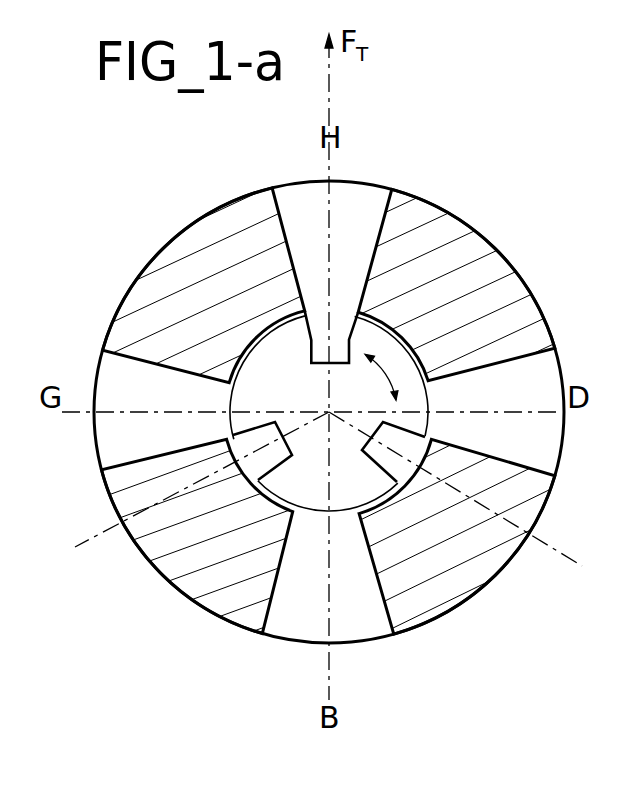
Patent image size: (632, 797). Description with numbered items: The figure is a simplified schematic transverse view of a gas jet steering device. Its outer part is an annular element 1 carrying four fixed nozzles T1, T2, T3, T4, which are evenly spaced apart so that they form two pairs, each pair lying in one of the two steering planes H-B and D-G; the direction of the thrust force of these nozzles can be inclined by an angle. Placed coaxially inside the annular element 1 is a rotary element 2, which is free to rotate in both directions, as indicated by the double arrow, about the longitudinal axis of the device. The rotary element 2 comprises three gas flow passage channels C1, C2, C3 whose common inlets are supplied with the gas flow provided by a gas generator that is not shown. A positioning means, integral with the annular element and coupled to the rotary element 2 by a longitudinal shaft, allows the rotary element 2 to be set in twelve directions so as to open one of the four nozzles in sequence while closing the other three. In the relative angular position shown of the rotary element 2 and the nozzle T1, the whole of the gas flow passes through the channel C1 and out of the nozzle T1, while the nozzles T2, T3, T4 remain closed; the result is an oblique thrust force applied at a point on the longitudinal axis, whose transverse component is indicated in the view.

The annular element 1 is at (321, 395).
The rotary element 2 is at (245, 393).
The nozzle T1 is at (364, 204).
The nozzle T2 is at (468, 494).
The nozzle T3 is at (303, 620).
The nozzle T4 is at (120, 368).
The gas flow passage channel C1 is at (313, 355).
The gas flow passage channel C2 is at (408, 443).
The gas flow passage channel C3 is at (258, 480).